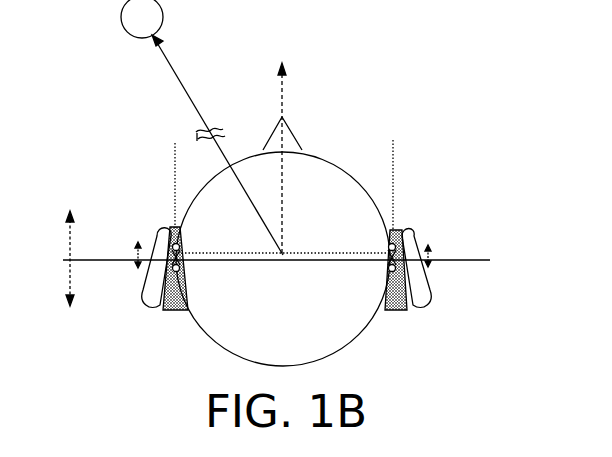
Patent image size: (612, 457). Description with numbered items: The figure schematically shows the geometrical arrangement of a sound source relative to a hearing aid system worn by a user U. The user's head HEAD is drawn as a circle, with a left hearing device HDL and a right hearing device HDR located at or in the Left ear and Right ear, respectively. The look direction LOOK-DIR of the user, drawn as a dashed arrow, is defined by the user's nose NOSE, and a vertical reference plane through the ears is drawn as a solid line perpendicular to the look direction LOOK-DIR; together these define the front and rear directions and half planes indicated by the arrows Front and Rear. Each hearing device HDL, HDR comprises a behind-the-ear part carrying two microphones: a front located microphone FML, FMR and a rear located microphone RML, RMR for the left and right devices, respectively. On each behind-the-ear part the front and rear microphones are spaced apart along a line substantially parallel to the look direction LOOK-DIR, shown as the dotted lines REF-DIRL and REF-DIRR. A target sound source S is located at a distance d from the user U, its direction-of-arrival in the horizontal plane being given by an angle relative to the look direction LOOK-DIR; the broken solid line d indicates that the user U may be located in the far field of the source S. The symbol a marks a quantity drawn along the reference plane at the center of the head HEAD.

The head HEAD is at (348, 350).
The user U is at (285, 351).
The head radius a is at (303, 247).
The look direction LOOK-DIR is at (335, 158).
The nose NOSE is at (293, 136).
The target sound source S is at (202, 127).
The distance d is at (210, 111).
The left reference direction REF-DIRL is at (175, 176).
The right reference direction REF-DIRR is at (423, 165).
The left ear Left ear is at (163, 229).
The right ear Right ear is at (412, 242).
The left hearing device HDL is at (176, 312).
The right hearing device HDR is at (395, 312).
The left front microphone FML is at (180, 246).
The left rear microphone RML is at (186, 289).
The right front microphone FMR is at (390, 248).
The right rear microphone RMR is at (388, 270).
The front direction Front is at (68, 248).
The rear direction Rear is at (78, 324).